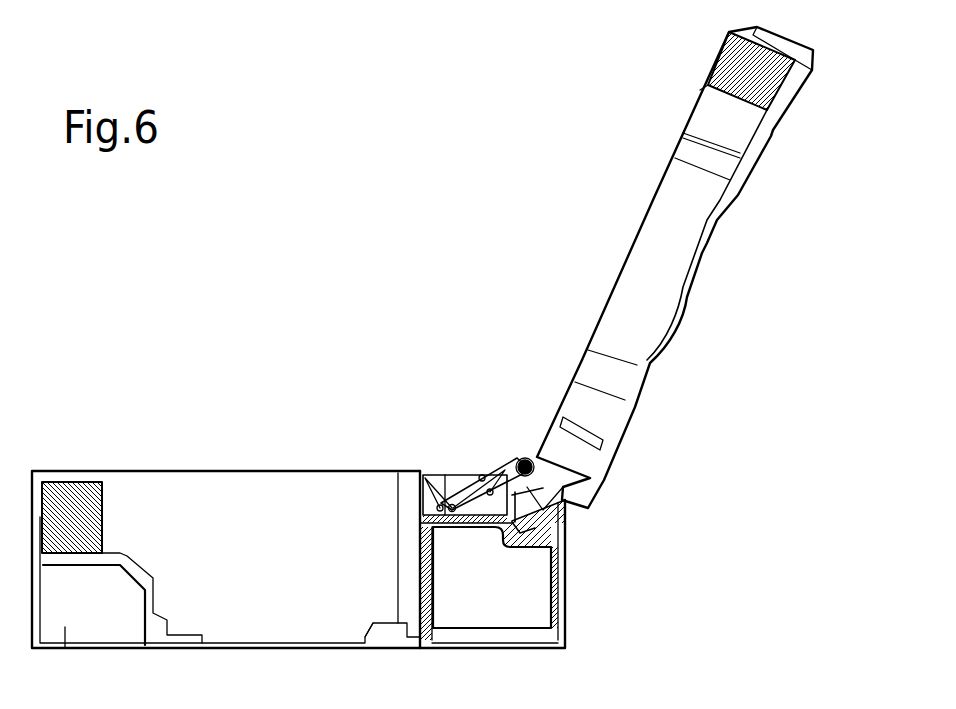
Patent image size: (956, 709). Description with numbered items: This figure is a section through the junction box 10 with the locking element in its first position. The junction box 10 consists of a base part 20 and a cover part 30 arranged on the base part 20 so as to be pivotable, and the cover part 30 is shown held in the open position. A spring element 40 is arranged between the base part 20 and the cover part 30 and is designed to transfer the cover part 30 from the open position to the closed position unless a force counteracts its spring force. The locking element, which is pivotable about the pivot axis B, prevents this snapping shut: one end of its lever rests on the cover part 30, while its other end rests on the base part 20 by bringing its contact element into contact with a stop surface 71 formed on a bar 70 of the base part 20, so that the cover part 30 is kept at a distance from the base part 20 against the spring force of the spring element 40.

The junction box 10 is at (573, 108).
The base part 20 is at (563, 573).
The cover part 30 is at (707, 250).
The spring element 40 is at (513, 518).
The bar 70 is at (440, 508).
The stop surface 71 is at (452, 504).
The pivot axis B is at (523, 457).